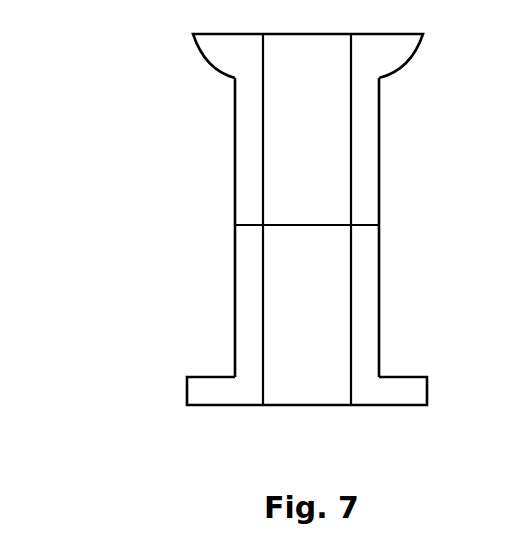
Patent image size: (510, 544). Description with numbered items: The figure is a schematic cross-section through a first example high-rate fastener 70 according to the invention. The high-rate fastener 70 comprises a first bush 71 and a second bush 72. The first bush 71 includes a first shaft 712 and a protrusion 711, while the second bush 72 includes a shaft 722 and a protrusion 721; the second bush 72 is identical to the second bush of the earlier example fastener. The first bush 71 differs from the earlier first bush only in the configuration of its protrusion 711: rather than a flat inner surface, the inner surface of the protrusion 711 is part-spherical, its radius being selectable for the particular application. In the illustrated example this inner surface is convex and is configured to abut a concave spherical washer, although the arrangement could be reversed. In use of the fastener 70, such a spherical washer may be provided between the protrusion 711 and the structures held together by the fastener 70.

The high-rate fastener 70 is at (90, 156).
The first bush 71 is at (285, 127).
The second bush 72 is at (285, 316).
The protrusion 711 is at (212, 52).
The first shaft 712 is at (366, 128).
The protrusion 721 is at (197, 391).
The shaft 722 is at (372, 308).